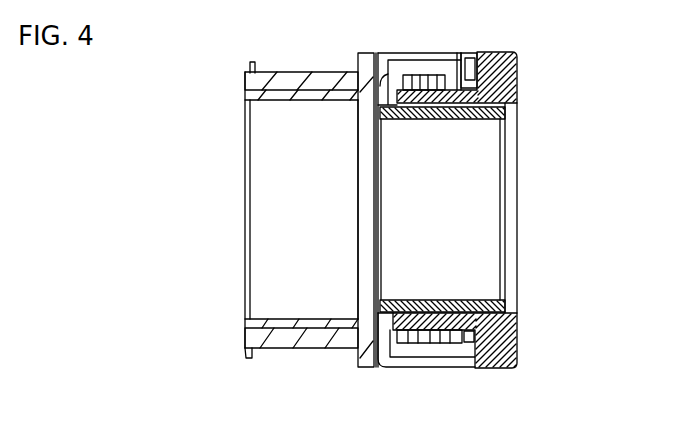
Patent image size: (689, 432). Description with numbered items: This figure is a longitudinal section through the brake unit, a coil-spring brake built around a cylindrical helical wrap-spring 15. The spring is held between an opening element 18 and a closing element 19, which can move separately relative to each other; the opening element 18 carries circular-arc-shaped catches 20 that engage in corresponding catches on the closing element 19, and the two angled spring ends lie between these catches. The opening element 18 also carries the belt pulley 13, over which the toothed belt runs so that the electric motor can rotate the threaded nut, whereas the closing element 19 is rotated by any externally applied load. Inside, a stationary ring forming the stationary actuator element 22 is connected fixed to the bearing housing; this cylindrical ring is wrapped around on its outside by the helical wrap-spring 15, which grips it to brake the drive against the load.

The belt pulley 13 is at (275, 82).
The helical wrap-spring 15 is at (437, 73).
The opening element 18 is at (368, 78).
The closing element 19 is at (422, 120).
The catches 20 is at (408, 68).
The stationary actuator element 22 is at (517, 64).